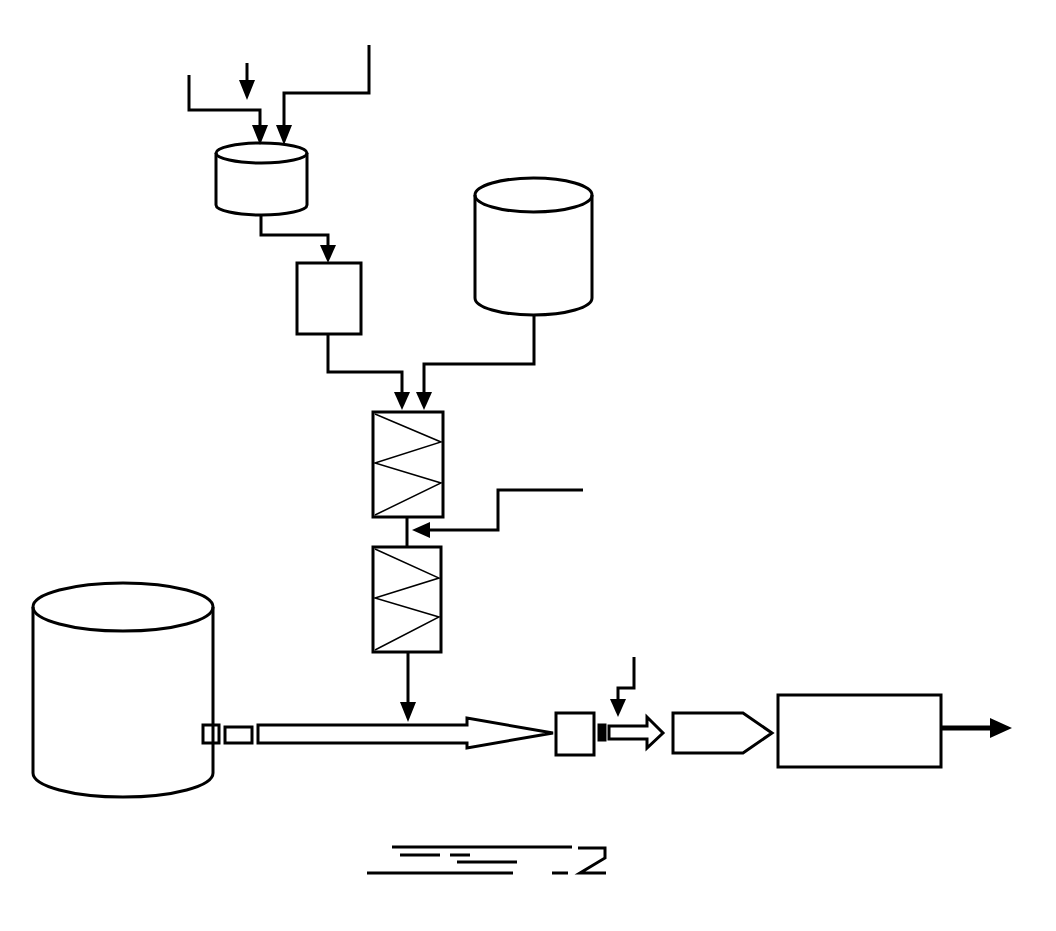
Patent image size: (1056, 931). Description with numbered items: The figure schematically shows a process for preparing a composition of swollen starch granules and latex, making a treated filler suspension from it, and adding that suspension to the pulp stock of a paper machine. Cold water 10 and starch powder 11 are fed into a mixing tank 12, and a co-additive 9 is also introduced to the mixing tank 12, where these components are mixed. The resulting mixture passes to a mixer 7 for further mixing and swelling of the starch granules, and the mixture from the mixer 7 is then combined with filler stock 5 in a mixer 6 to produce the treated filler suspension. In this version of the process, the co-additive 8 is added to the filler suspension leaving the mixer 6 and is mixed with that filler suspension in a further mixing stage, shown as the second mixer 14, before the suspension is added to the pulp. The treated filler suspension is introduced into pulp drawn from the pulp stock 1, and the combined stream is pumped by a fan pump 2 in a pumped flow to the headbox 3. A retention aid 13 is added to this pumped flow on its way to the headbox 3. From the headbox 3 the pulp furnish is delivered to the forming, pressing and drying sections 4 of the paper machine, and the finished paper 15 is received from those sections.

The pulp stock 1 is at (123, 671).
The fan pump 2 is at (575, 751).
The headbox 3 is at (722, 751).
The forming, pressing and drying sections 4 is at (859, 748).
The filler stock 5 is at (549, 246).
The mixer 6 is at (393, 464).
The mixer 7 is at (316, 298).
The co-additive 8 is at (514, 509).
The co-additive 9 is at (329, 84).
The cold water 10 is at (252, 64).
The starch powder 11 is at (221, 94).
The mixing tank 12 is at (241, 179).
The retention aid 13 is at (633, 673).
The paper 14 is at (389, 599).
The outlet 15 is at (996, 724).